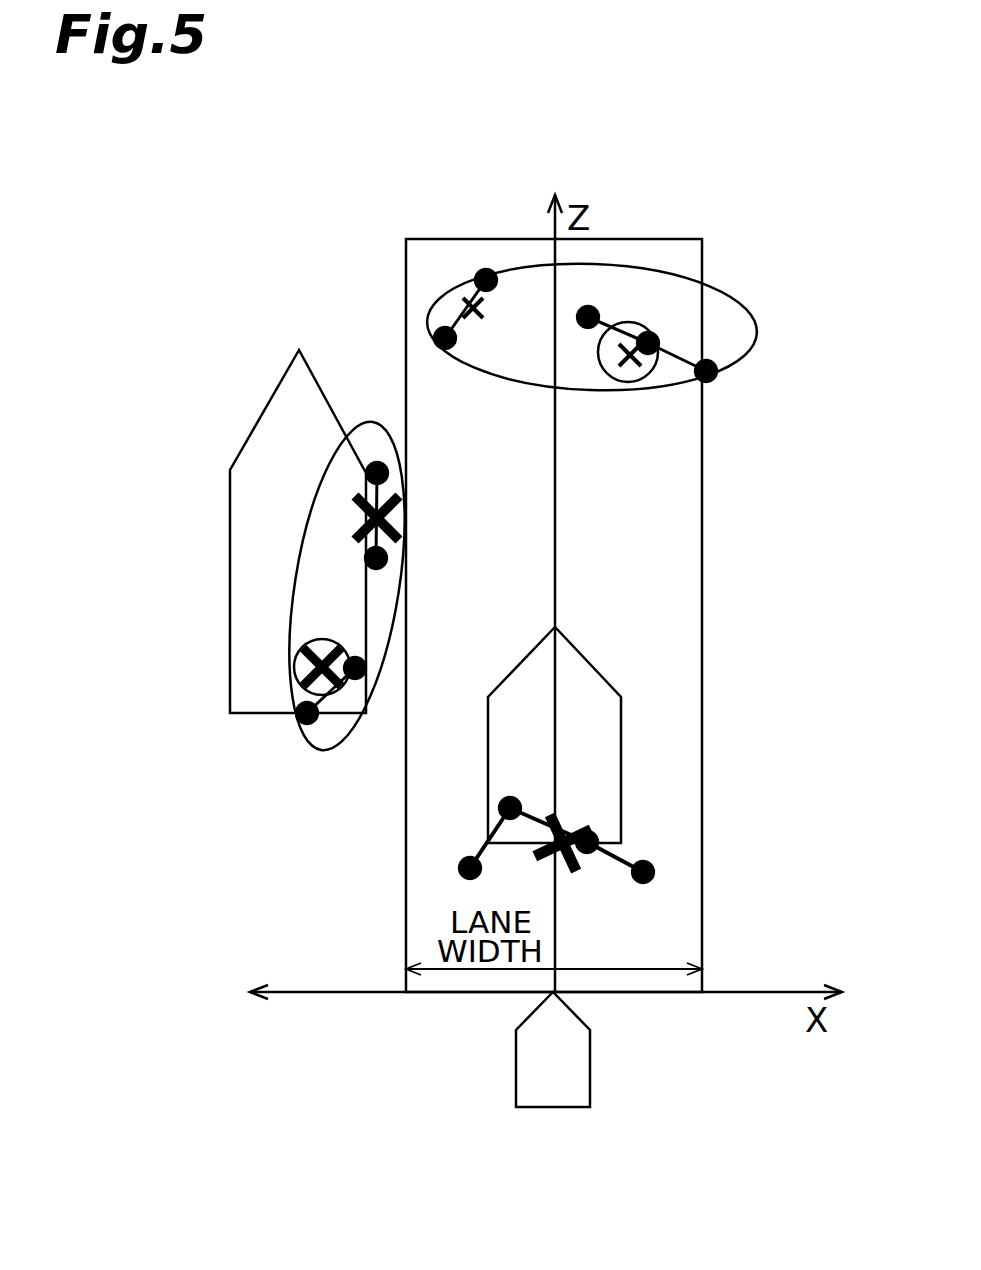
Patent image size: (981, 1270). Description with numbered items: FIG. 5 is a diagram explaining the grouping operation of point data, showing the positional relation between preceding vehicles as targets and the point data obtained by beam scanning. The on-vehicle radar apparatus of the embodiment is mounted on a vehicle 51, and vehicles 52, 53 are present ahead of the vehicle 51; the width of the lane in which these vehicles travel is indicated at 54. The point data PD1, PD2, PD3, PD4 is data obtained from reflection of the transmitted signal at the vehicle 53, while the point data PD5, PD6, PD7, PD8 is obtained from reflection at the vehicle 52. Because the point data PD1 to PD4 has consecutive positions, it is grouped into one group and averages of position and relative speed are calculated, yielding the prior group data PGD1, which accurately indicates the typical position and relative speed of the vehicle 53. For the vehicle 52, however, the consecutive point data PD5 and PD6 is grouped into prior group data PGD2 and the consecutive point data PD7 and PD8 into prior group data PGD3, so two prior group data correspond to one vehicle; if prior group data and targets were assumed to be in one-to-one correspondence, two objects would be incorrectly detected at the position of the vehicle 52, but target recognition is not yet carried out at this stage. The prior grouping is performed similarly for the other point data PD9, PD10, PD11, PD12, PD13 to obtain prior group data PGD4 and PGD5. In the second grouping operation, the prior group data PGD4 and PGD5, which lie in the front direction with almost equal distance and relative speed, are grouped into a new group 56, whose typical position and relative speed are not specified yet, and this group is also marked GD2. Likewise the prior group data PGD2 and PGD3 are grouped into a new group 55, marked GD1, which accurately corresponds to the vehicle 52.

The vehicle 51 is at (590, 1053).
The vehicle 52 is at (230, 590).
The vehicle 53 is at (622, 738).
The lane width 54 is at (650, 967).
The group 55 is at (367, 422).
The group 56 is at (588, 263).
The point data PD1 is at (465, 858).
The point data PD2 is at (512, 797).
The point data PD3 is at (595, 833).
The point data PD4 is at (655, 867).
The point data PD5 is at (293, 725).
The point data PD6 is at (367, 660).
The point data PD7 is at (390, 558).
The point data PD8 is at (390, 473).
The point data PD9 is at (482, 270).
The point data PD10 is at (443, 350).
The point data PD11 is at (590, 308).
The point data PD12 is at (653, 333).
The point data PD13 is at (718, 375).
The prior group data PGD1 is at (560, 855).
The prior group data PGD2 is at (300, 653).
The prior group data PGD3 is at (363, 513).
The prior group data PGD4 is at (488, 317).
The prior group data PGD5 is at (645, 378).
The group data GD1 is at (297, 675).
The group data GD2 is at (600, 370).